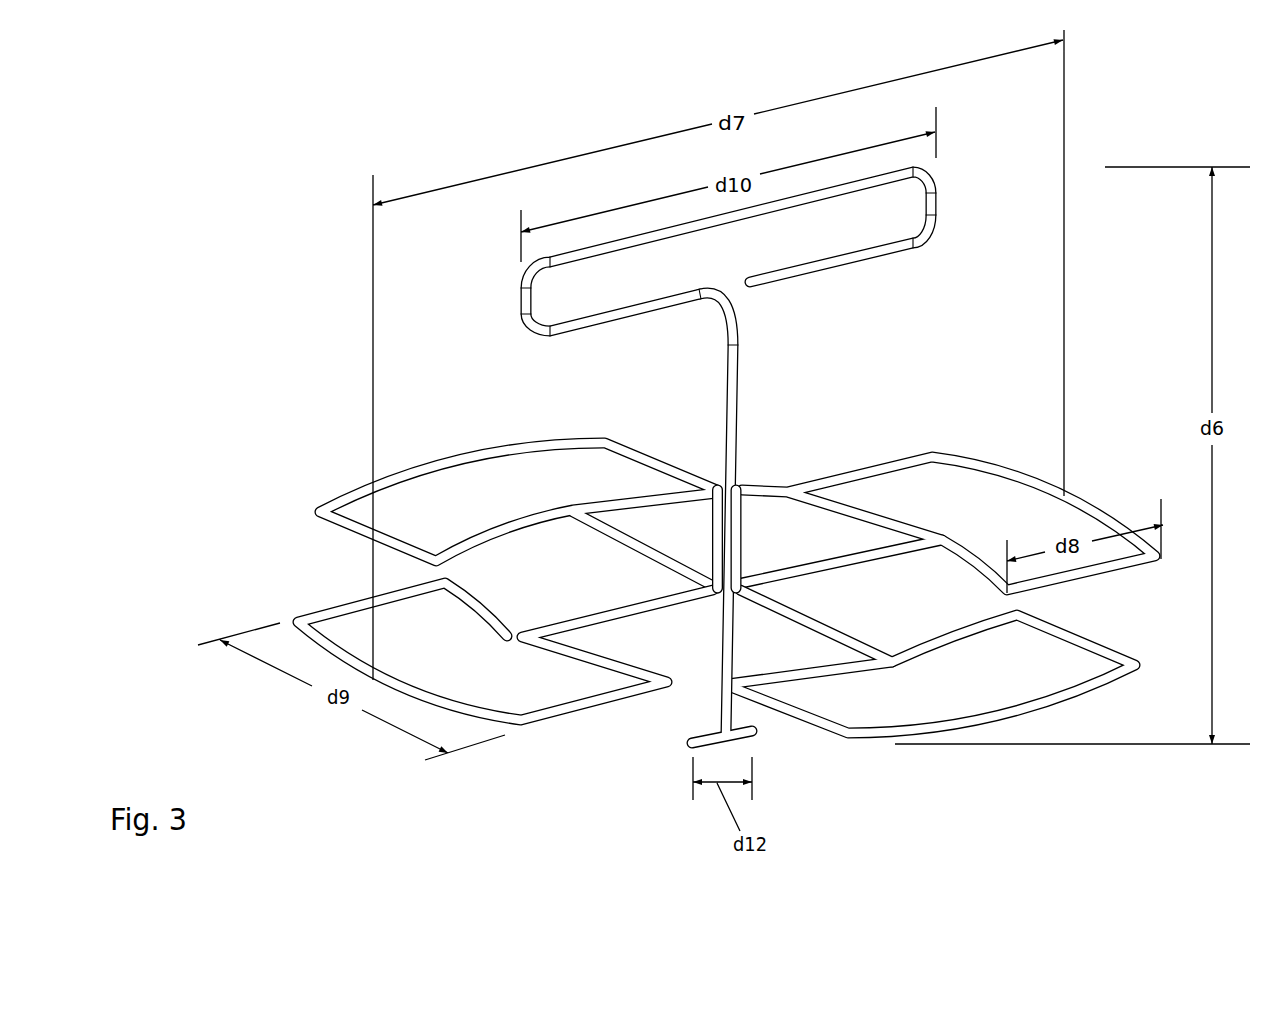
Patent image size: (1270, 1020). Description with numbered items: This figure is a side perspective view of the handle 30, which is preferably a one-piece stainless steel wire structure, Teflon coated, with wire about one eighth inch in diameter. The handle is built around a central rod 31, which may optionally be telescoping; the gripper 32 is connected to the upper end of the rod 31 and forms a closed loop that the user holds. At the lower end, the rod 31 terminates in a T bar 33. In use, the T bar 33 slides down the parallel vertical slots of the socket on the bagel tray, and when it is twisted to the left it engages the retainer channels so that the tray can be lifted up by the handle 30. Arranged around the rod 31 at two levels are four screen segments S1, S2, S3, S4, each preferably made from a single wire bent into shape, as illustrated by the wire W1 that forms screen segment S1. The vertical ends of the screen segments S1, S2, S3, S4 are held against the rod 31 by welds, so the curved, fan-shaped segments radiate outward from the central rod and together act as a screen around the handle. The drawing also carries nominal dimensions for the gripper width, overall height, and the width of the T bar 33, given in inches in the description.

The handle 30 is at (309, 240).
The rod 31 is at (739, 384).
The gripper 32 is at (773, 214).
The T bar 33 is at (689, 743).
The screen segment S1 is at (1092, 644).
The screen segment S2 is at (975, 456).
The screen segment S3 is at (472, 452).
The screen segment S4 is at (325, 610).
The wire W1 is at (741, 545).